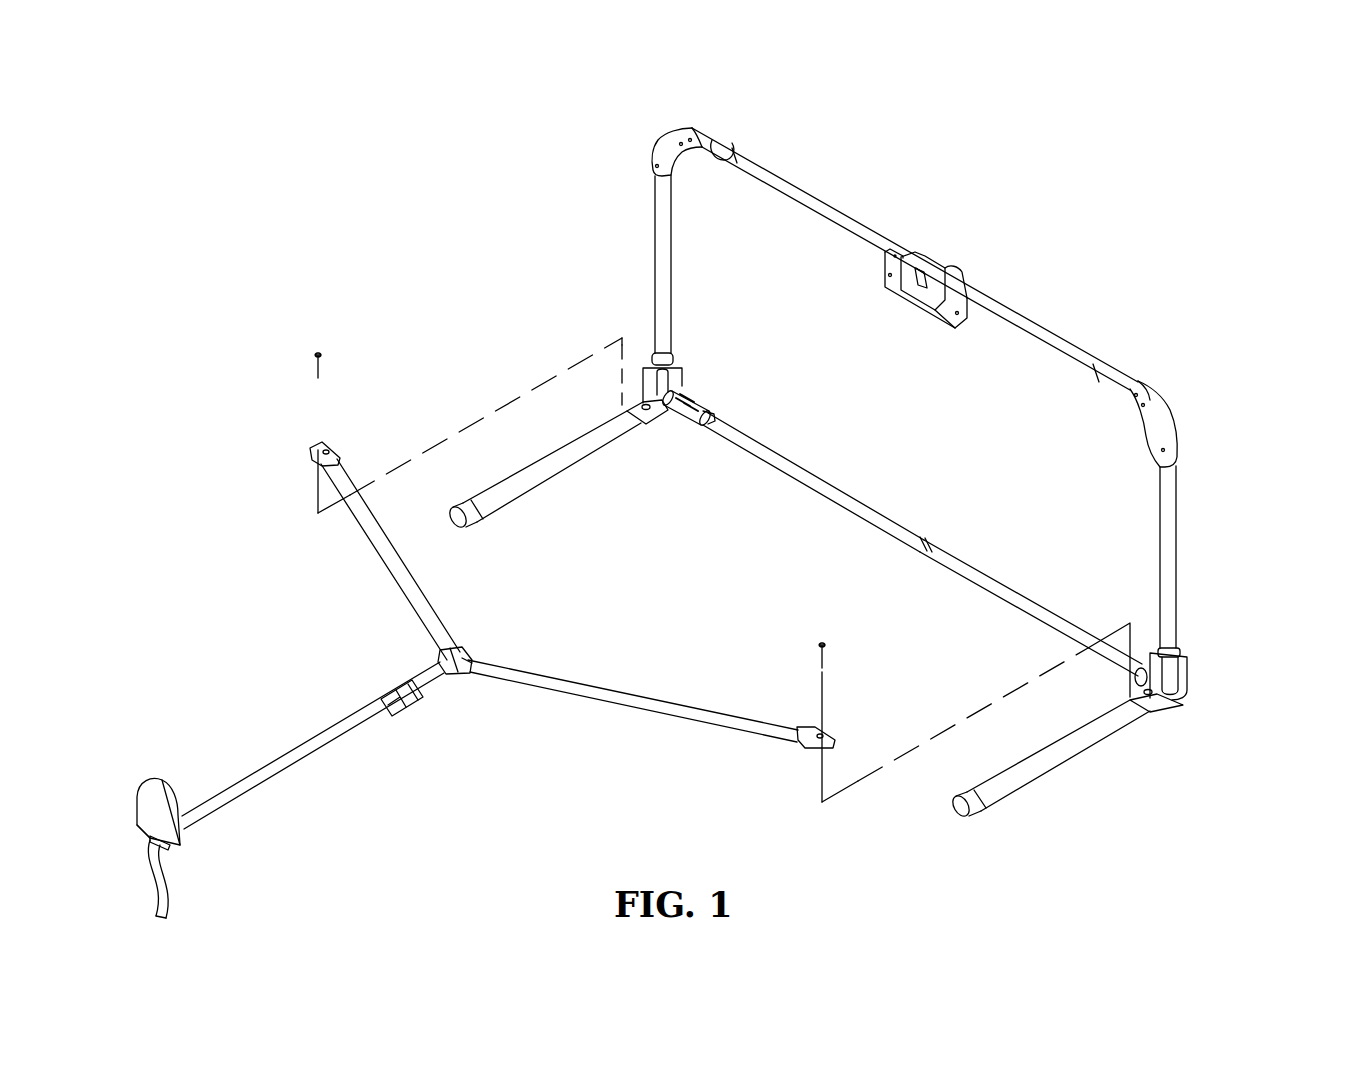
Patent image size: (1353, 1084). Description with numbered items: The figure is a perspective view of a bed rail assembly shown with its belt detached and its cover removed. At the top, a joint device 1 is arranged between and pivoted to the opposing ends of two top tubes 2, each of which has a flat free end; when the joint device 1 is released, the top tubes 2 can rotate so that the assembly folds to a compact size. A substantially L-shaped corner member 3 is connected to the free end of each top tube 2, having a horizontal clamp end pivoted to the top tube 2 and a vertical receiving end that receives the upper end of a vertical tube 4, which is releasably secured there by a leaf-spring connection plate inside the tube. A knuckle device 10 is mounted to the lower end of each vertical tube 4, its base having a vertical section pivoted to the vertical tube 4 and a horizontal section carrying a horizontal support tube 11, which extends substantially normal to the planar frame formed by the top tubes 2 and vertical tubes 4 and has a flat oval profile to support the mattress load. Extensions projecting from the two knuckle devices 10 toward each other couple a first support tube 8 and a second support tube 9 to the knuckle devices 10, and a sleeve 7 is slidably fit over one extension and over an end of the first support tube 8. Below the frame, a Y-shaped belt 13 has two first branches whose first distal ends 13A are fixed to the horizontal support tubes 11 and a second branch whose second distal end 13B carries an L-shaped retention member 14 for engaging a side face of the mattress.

The joint device 1 is at (937, 250).
The top tube 2 is at (819, 203).
The corner member 3 is at (646, 133).
The vertical tube 4 is at (666, 235).
The sleeve 7 is at (697, 427).
The first support tube 8 is at (817, 482).
The second support tube 9 is at (1006, 592).
The knuckle device 10 is at (667, 426).
The horizontal support tube 11 is at (545, 468).
The Y-shaped belt 13 is at (461, 660).
The first distal end 13A is at (310, 451).
The second distal end 13B is at (412, 716).
The L-shaped retention member 14 is at (150, 793).